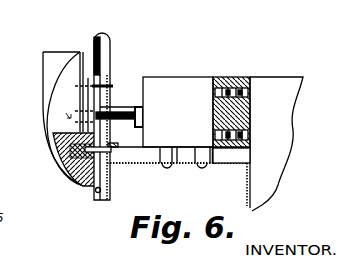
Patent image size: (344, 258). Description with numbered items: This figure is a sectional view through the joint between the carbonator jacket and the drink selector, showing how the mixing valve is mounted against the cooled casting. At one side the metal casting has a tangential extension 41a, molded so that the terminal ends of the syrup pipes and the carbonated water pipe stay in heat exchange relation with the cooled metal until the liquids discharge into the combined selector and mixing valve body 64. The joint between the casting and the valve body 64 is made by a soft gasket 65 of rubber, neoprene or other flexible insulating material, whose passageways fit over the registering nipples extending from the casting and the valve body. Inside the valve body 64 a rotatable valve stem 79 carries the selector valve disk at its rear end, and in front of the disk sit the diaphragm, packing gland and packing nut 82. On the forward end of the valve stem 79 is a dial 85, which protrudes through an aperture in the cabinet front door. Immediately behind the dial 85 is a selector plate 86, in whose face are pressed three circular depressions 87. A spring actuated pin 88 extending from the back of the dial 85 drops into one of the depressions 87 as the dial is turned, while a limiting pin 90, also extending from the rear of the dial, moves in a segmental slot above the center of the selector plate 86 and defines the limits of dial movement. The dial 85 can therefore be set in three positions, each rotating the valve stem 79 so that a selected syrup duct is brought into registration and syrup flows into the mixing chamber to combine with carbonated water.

The tangential extension 41a is at (274, 88).
The combined selector and mixing valve body 64 is at (186, 85).
The soft gasket 65 is at (231, 77).
The valve stem 79 is at (122, 113).
The packing nut 82 is at (143, 113).
The dial 85 is at (56, 131).
The selector plate 86 is at (110, 48).
The circular depressions 87 is at (110, 145).
The spring actuated pin 88 is at (111, 150).
The limiting pin 90 is at (110, 86).